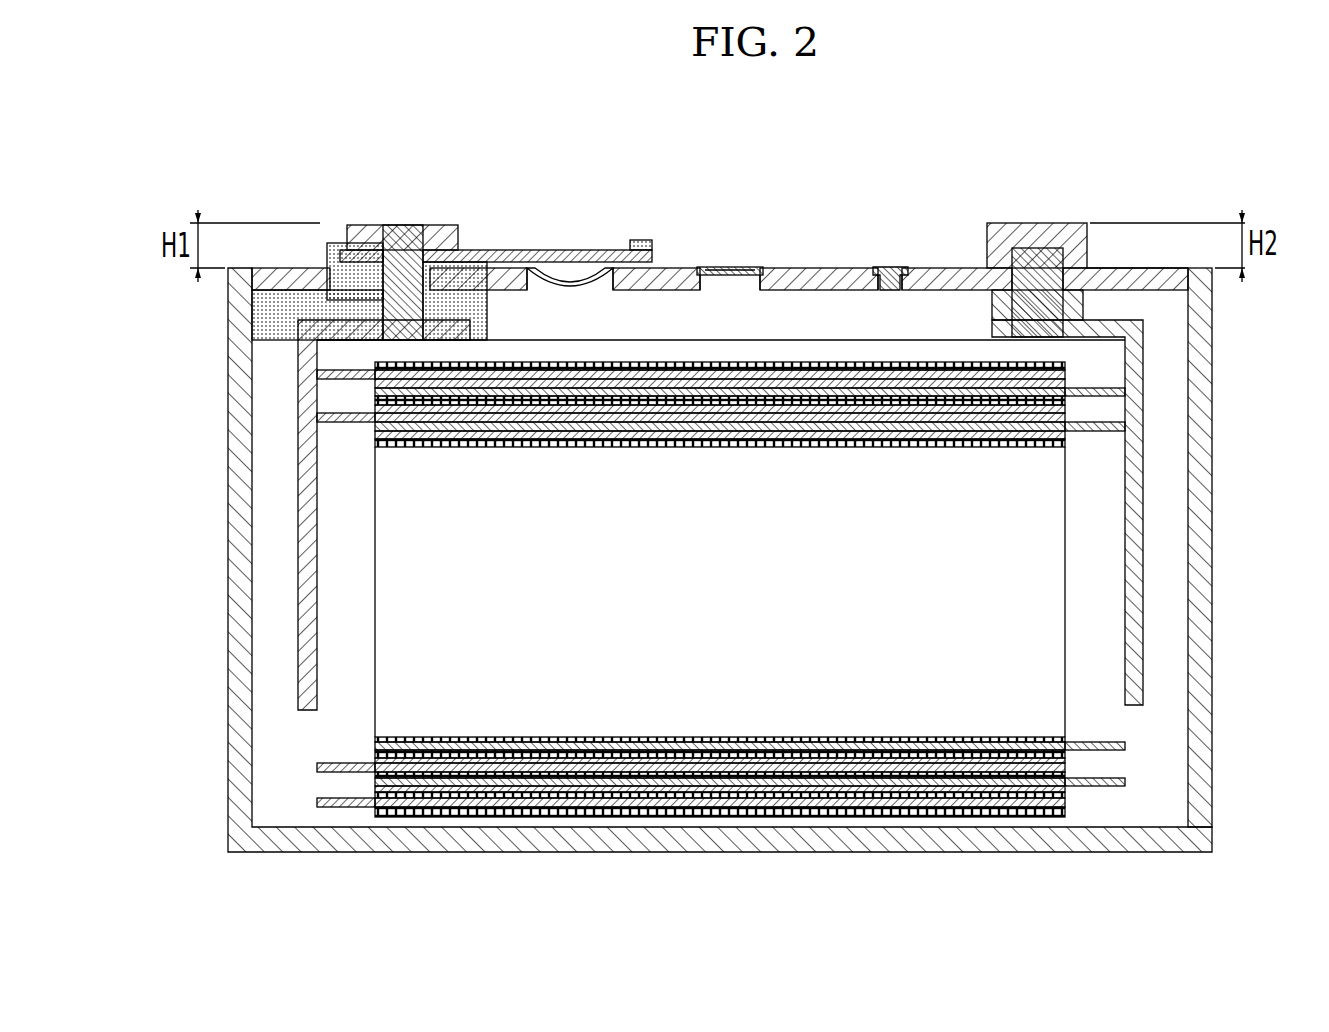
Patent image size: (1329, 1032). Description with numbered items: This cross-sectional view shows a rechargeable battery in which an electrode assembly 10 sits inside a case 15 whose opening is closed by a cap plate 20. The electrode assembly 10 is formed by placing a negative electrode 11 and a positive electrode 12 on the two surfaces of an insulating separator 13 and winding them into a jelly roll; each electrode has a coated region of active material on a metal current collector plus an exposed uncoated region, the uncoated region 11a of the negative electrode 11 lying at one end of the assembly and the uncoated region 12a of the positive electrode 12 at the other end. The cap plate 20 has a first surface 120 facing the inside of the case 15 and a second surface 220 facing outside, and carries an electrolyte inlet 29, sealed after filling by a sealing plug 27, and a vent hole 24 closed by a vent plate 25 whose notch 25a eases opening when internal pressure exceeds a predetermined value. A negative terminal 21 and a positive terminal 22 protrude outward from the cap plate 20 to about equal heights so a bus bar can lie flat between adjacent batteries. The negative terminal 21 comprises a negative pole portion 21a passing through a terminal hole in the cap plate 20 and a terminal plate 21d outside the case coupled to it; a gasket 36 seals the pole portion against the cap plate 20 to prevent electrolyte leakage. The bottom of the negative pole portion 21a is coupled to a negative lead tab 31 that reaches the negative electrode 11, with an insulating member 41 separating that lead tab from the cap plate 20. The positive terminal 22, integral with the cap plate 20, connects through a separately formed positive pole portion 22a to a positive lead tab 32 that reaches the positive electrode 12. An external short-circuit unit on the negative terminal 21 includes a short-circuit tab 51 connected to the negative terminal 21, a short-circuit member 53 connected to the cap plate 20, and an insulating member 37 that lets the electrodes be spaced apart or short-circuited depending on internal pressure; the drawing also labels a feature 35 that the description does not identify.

The electrode assembly 10 is at (838, 816).
The negative electrode 11 is at (485, 803).
The uncoated region of negative electrode 11a is at (335, 808).
The positive electrode 12 is at (557, 788).
The uncoated region of positive electrode 12a is at (1105, 788).
The separator 13 is at (715, 774).
The case 15 is at (1200, 496).
The cap plate 20 is at (738, 200).
The first surface of cap plate 120 is at (1142, 290).
The second surface of cap plate 220 is at (1137, 207).
The negative terminal 21 is at (410, 232).
The negative pole portion 21a is at (400, 225).
The terminal plate 21d is at (432, 225).
The positive terminal 22 is at (1026, 233).
The positive pole portion 22a is at (1030, 260).
The vent hole 24 is at (728, 291).
The vent plate 25 is at (757, 266).
The notch 25a is at (719, 267).
The sealing plug 27 is at (886, 267).
The electrolyte inlet 29 is at (888, 291).
The negative lead tab 31 is at (310, 518).
The positive lead tab 32 is at (1137, 625).
The short-circuit hole 35 is at (597, 291).
The gasket 36 is at (372, 282).
The insulating member 37 is at (641, 240).
The insulating member 41 is at (262, 322).
The short-circuit tab 51 is at (500, 252).
The short-circuit member 53 is at (577, 265).